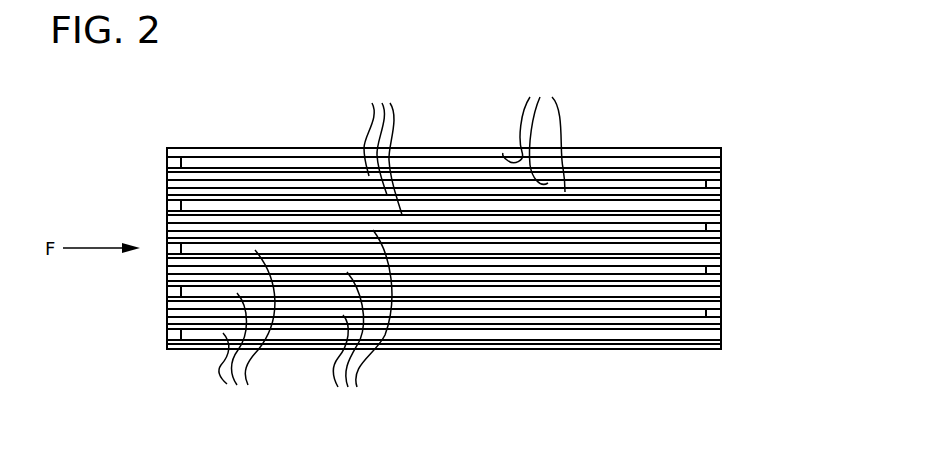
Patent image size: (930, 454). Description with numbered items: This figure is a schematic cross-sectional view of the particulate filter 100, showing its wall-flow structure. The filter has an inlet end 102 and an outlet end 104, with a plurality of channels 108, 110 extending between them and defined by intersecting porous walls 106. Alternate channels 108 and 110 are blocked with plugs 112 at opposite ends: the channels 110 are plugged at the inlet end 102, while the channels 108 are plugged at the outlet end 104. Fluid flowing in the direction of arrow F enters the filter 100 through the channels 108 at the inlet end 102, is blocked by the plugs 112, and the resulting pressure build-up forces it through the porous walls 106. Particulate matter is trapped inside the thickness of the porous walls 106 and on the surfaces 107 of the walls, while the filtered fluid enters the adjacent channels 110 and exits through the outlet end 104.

The particulate filter 100 is at (680, 87).
The inlet end 102 is at (167, 177).
The outlet end 104 is at (721, 332).
The porous walls 106 is at (380, 147).
The surfaces of the porous walls 107 is at (534, 131).
The channels 108 is at (361, 323).
The channels 110 is at (247, 329).
The plugs 112 is at (172, 248).